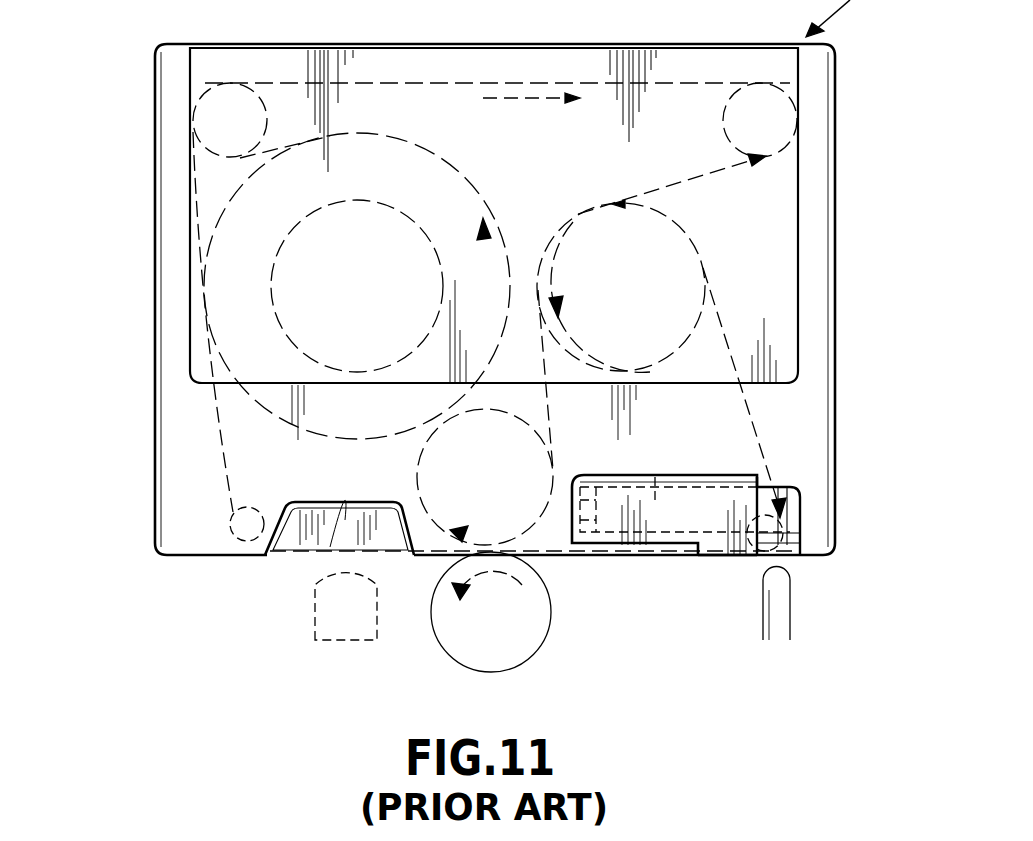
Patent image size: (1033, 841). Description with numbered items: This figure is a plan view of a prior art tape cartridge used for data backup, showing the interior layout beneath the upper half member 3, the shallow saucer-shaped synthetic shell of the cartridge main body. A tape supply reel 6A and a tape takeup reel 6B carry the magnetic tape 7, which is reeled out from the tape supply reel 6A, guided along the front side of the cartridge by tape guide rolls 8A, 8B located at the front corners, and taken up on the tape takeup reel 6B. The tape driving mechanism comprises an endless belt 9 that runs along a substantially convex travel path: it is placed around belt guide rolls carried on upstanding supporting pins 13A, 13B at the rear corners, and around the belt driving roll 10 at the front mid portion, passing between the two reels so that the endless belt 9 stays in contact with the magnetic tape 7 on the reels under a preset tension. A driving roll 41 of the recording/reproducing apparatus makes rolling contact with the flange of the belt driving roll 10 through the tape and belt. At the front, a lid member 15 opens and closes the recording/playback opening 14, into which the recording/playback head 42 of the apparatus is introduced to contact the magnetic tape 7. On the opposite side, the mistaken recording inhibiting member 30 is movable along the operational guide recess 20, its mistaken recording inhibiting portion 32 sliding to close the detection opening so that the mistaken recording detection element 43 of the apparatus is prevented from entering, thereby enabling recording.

The upper half member 3 is at (835, 298).
The endless belt 9 is at (440, 83).
The supporting pin 13A is at (205, 118).
The supporting pin 13B is at (773, 113).
The tape supply reel 6A is at (275, 265).
The tape takeup reel 6B is at (700, 247).
The magnetic tape 7 is at (215, 437).
The tape guide roll 8A is at (236, 530).
The tape guide roll 8B is at (783, 530).
The recording/playback opening 14 is at (315, 548).
The lid member 15 is at (298, 538).
The recording/playback head 42 is at (315, 595).
The belt driving roll 10 is at (430, 553).
The driving roll 41 is at (552, 622).
The mistaken recording inhibiting member 30 is at (655, 530).
The mistaken recording inhibiting portion 32 is at (720, 555).
The operational guide recess 20 is at (800, 500).
The mistaken recording detection element 43 is at (790, 597).